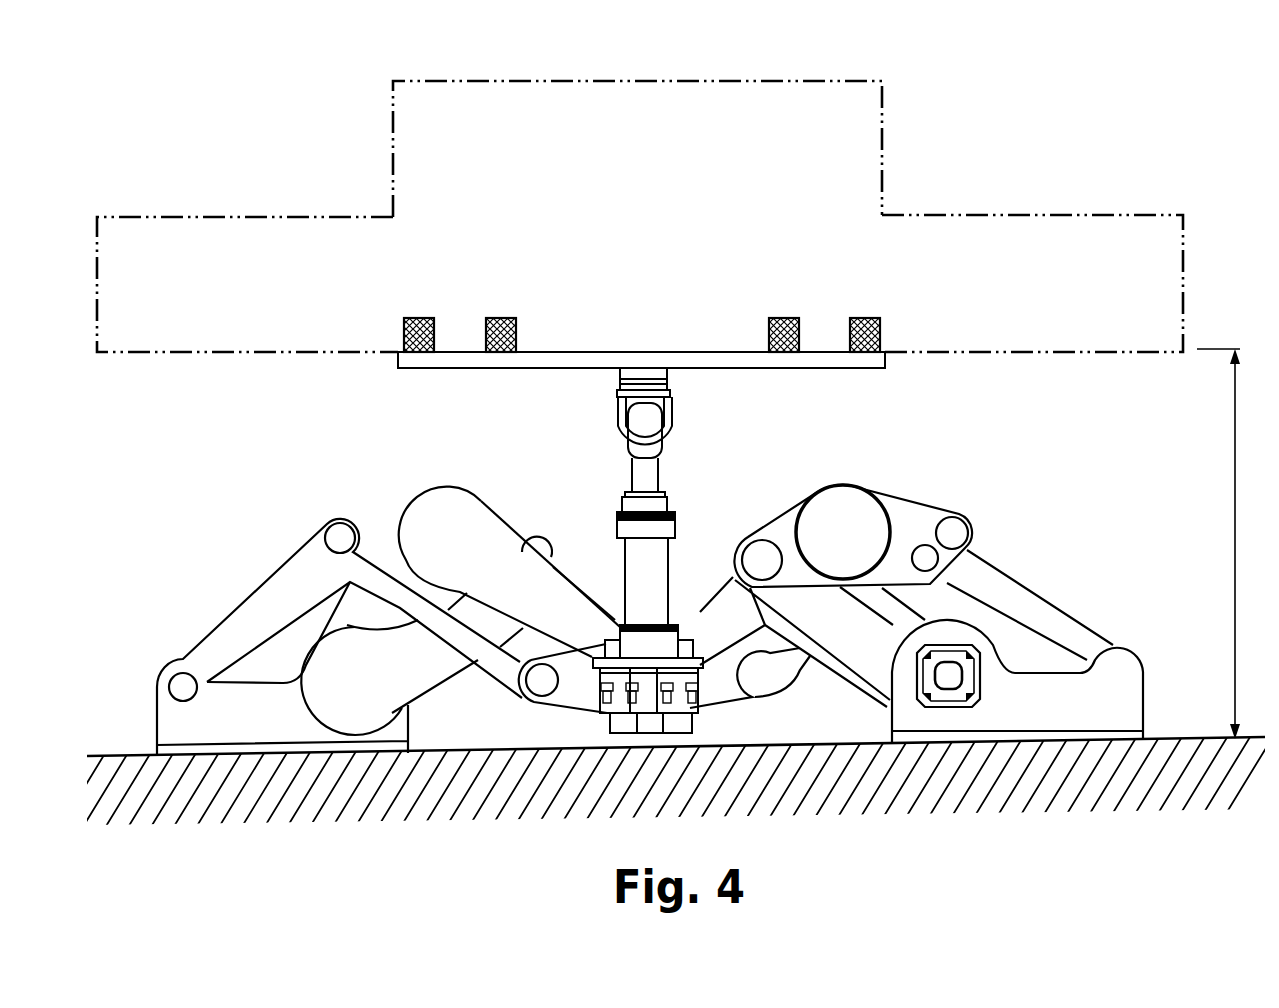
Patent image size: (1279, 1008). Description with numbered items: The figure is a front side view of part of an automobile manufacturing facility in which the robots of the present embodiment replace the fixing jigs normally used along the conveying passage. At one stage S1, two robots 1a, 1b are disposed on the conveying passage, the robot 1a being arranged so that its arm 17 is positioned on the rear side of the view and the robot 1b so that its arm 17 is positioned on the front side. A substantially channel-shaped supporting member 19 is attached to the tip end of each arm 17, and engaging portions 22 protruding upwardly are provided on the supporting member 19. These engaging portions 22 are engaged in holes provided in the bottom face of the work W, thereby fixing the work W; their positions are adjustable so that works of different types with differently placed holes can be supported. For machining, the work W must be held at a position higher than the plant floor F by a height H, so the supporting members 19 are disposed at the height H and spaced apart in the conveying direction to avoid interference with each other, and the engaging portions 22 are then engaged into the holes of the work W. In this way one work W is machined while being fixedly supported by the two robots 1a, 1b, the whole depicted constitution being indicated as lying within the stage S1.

The robot 1a is at (1068, 563).
The robot 1b is at (270, 572).
The arm 17 is at (672, 578).
The supporting member 19 is at (824, 369).
The engaging portion 22 is at (867, 318).
The work W is at (1011, 213).
The stage S1 is at (793, 70).
The floor F is at (112, 755).
The height H is at (1227, 544).